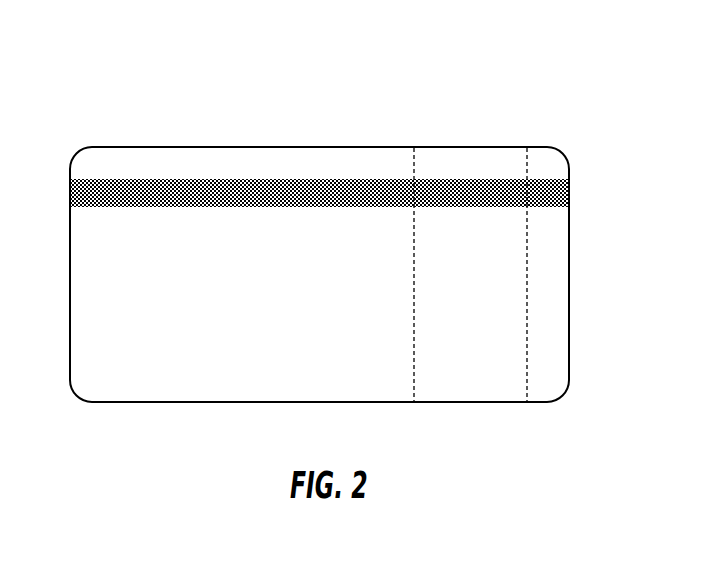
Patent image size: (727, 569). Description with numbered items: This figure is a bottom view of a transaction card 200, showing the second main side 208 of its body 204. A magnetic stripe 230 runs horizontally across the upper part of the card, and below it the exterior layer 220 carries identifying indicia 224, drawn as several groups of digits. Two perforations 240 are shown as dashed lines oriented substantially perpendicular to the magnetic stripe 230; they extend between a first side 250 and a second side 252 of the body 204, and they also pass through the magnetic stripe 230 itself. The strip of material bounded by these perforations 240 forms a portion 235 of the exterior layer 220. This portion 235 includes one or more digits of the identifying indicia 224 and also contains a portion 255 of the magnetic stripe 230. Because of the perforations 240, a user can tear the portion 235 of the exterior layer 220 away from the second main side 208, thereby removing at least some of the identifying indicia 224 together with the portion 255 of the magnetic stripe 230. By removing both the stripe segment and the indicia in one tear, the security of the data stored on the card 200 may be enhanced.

The card 200 is at (86, 88).
The body 204 is at (337, 139).
The second main side 208 is at (162, 391).
The exterior layer 220 is at (557, 234).
The identifying indicia 224 is at (526, 273).
The magnetic stripe 230 is at (557, 195).
The portion of the exterior layer 235 is at (455, 383).
The perforations 240 is at (415, 165).
The first side 250 is at (250, 147).
The second side 252 is at (240, 403).
The portion of the magnetic stripe 255 is at (497, 190).